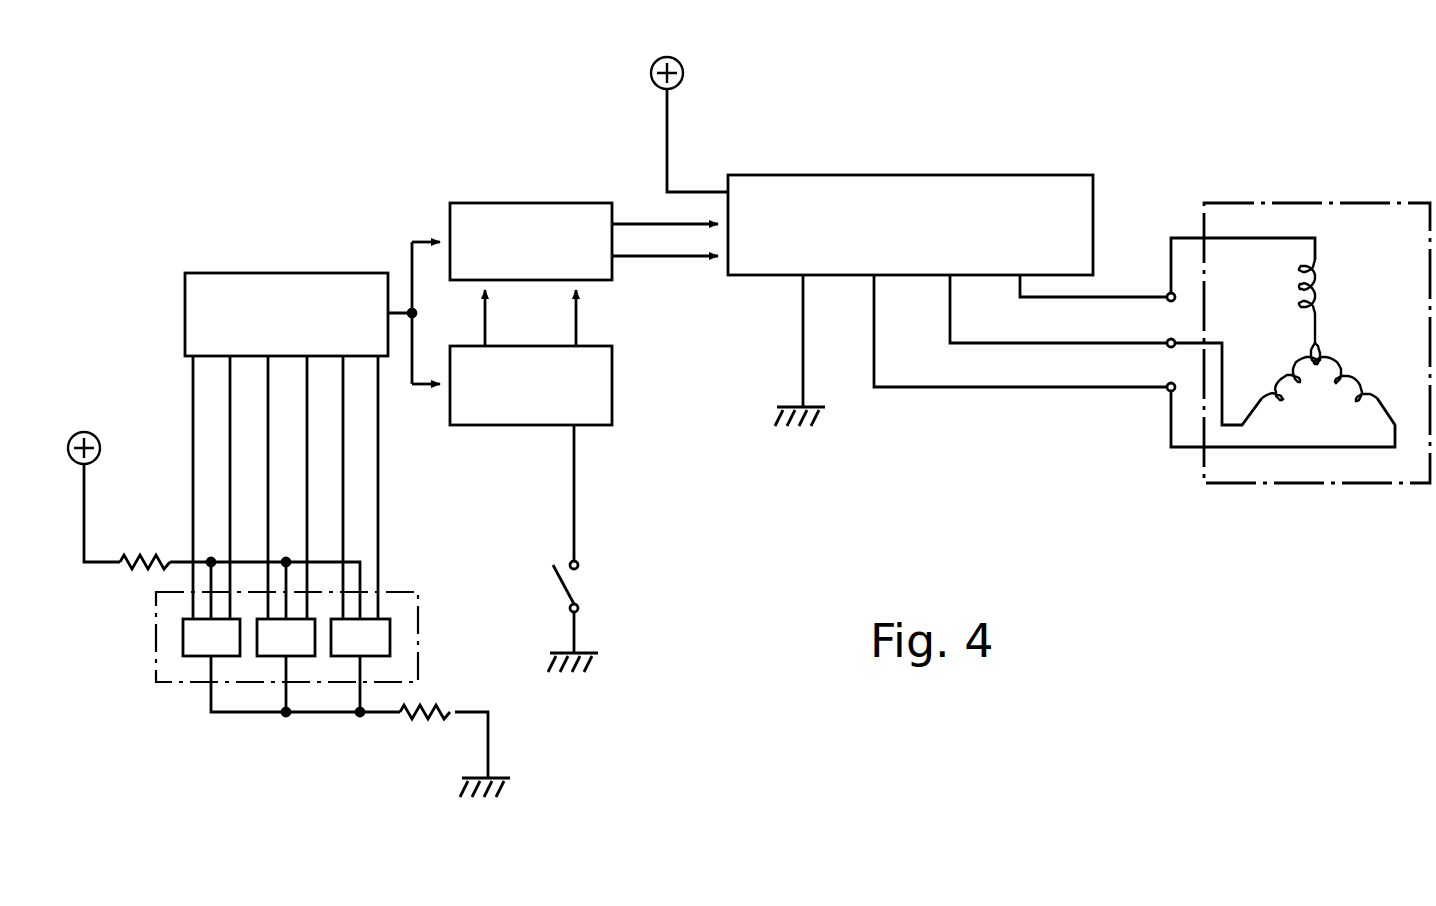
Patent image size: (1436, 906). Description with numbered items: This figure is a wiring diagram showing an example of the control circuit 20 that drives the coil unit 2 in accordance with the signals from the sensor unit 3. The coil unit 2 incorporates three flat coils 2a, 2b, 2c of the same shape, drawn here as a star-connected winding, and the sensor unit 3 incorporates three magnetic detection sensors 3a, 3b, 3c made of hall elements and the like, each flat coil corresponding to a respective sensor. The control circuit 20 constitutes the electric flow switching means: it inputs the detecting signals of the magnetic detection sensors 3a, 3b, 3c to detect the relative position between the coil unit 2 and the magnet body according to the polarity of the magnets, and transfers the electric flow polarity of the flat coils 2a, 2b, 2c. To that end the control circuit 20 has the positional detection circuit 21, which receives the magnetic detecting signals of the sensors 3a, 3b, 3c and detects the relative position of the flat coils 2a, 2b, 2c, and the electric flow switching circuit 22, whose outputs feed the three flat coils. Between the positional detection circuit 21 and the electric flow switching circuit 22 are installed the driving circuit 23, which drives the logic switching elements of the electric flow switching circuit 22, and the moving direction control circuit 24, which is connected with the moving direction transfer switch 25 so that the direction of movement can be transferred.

The coil unit 2 is at (1300, 283).
The flat coil 2a is at (1323, 290).
The flat coil 2b is at (1350, 378).
The flat coil 2c is at (1278, 380).
The sensor unit 3 is at (243, 679).
The magnetic detection sensor 3a is at (195, 656).
The magnetic detection sensor 3b is at (272, 656).
The magnetic detection sensor 3c is at (350, 656).
The control circuit 20 is at (340, 178).
The positional detection circuit 21 is at (185, 313).
The electric flow switching circuit 22 is at (920, 175).
The driving circuit 23 is at (530, 203).
The moving direction control circuit 24 is at (525, 425).
The moving direction transfer switch 25 is at (570, 587).